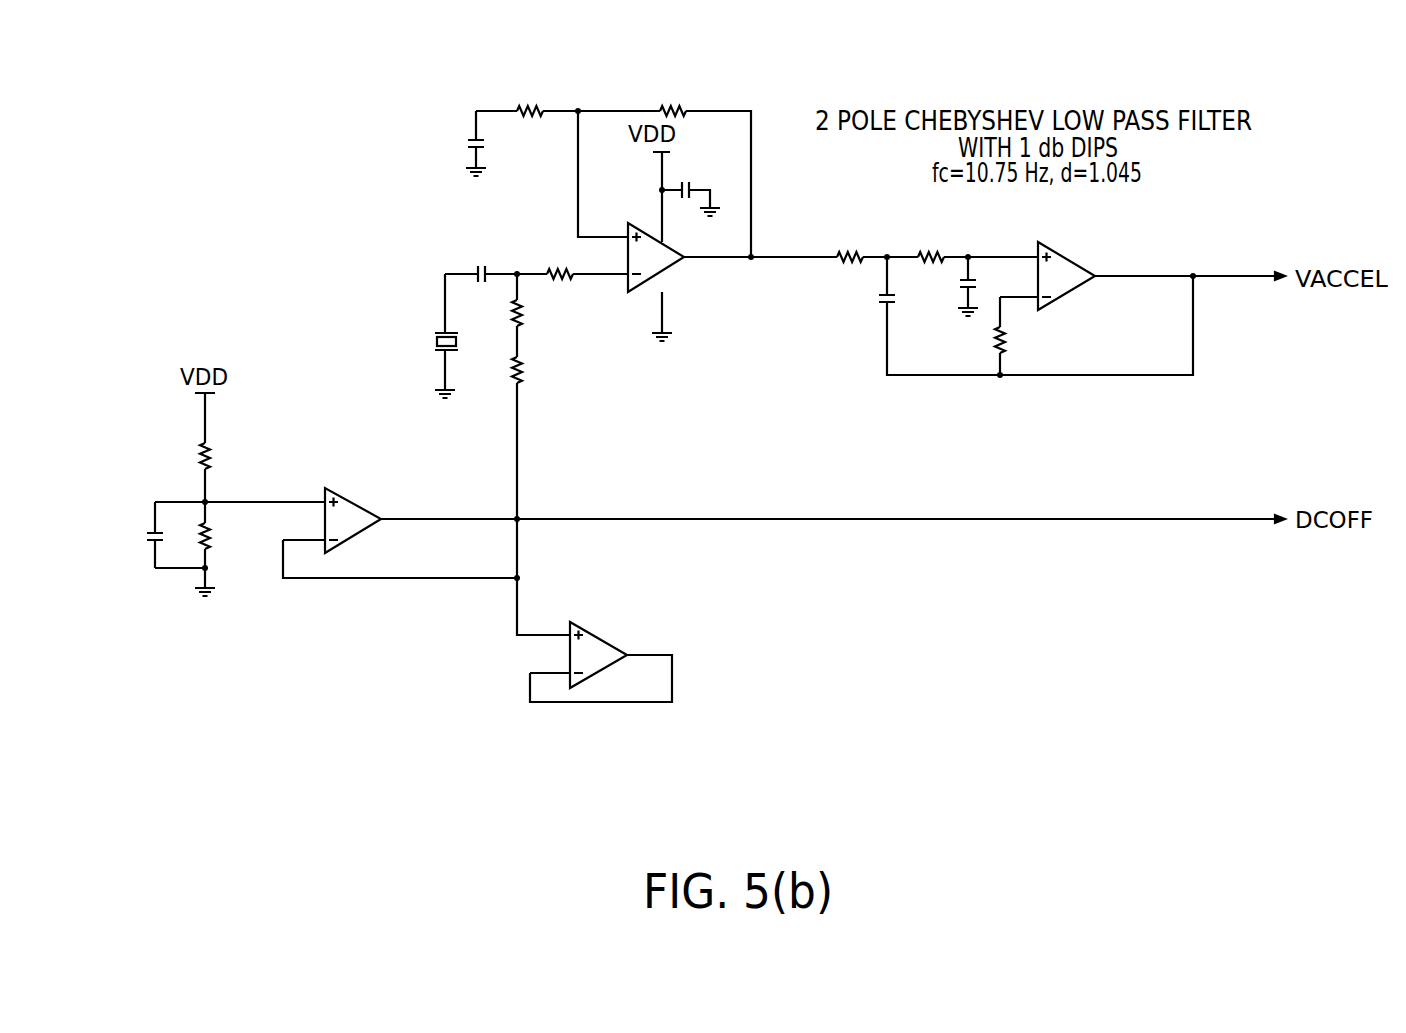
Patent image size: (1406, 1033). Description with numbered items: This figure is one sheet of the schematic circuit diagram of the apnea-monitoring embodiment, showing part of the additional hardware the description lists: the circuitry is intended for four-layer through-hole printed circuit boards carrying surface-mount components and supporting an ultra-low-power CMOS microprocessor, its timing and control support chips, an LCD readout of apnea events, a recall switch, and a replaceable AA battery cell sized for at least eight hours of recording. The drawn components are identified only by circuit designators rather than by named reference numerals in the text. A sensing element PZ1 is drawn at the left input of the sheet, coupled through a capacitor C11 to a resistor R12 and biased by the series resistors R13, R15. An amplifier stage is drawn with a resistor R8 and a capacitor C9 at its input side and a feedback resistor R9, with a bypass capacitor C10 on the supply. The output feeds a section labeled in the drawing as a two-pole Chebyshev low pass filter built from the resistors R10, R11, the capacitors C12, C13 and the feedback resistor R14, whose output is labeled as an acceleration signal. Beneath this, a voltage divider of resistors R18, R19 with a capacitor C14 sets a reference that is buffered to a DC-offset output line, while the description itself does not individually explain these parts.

The 220K resistor R8 is at (529, 84).
The 4.7M feedback resistor R9 is at (675, 84).
The 1uF capacitor C9 is at (452, 139).
The .01 supply bypass capacitor C10 is at (707, 167).
The .1 coupling capacitor C11 is at (475, 248).
The 100K resistor R12 is at (548, 246).
The 22M bias resistor R13 is at (544, 317).
The 22M bias resistor R15 is at (544, 373).
The piezoelectric sensor PZ1 is at (425, 344).
The 330K filter resistor R10 is at (844, 229).
The 330K filter resistor R11 is at (929, 229).
The .027 filter capacitor C12 is at (944, 294).
The .1 filter capacitor C13 is at (871, 318).
The 680K feedback resistor R14 is at (1028, 342).
The 470K divider resistor R18 is at (177, 461).
The 470K divider resistor R19 is at (233, 537).
The .01 capacitor C14 is at (130, 538).